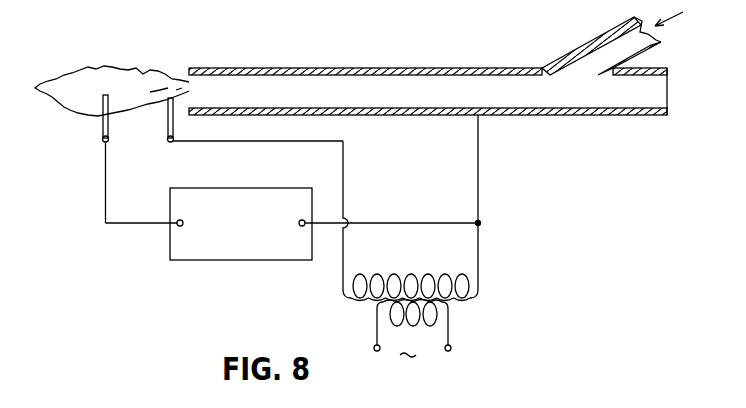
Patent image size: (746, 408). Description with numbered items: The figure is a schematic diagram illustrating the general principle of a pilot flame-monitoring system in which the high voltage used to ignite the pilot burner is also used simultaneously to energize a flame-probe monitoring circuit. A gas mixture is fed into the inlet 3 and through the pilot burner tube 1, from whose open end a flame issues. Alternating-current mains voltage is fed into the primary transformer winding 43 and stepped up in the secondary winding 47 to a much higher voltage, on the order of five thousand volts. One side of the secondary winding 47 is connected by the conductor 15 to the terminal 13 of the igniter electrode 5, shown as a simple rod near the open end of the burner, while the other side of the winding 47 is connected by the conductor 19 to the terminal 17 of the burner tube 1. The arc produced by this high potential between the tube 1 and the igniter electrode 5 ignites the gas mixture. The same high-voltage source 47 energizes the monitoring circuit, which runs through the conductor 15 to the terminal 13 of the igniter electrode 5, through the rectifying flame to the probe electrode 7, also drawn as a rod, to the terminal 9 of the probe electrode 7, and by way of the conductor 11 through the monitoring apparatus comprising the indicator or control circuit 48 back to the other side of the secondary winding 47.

The pilot burner tube 1 is at (392, 68).
The inlet 3 is at (573, 52).
The igniter electrode 5 is at (174, 127).
The probe electrode 7 is at (103, 117).
The terminal of the probe electrode 9 is at (103, 141).
The conductor 11 is at (128, 226).
The terminal of the igniter electrode 13 is at (172, 143).
The conductor 15 is at (344, 156).
The terminal of the burner tube 17 is at (481, 118).
The conductor 19 is at (480, 207).
The primary transformer winding 43 is at (422, 315).
The secondary winding 47 is at (412, 282).
The indicator or control circuit 48 is at (263, 260).